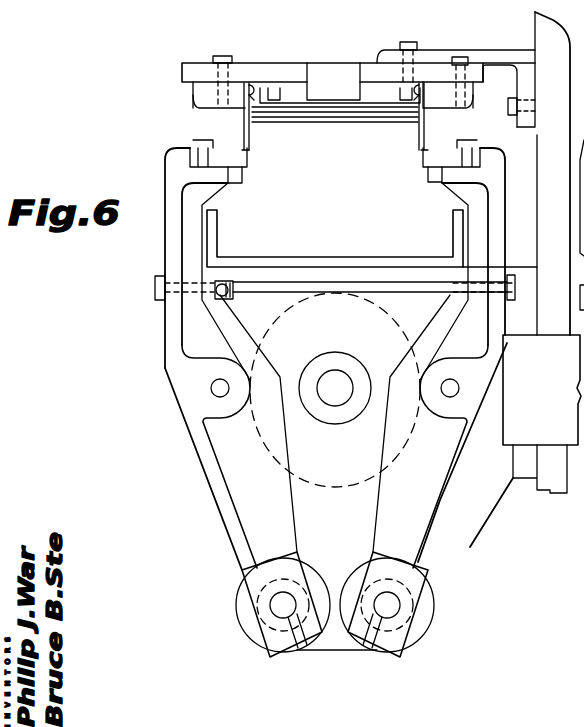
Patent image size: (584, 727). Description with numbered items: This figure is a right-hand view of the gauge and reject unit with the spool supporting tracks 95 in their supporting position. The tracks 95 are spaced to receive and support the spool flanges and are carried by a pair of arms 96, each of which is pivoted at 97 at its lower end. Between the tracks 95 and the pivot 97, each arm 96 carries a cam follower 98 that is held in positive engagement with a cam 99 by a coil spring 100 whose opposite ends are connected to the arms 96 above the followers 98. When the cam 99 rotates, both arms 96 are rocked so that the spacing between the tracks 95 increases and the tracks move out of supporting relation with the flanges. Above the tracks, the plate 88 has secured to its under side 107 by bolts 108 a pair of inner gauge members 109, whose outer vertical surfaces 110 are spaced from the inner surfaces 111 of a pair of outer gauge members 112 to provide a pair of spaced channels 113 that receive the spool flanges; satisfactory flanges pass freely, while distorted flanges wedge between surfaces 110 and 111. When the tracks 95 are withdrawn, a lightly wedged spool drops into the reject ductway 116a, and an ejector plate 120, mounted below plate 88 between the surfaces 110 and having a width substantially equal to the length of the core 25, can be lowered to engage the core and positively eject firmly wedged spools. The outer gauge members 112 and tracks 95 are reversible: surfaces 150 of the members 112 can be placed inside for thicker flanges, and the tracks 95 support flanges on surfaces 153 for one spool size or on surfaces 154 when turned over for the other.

The core 25 is at (343, 113).
The plate 88 is at (297, 52).
The tracks 95 is at (237, 170).
The arms 96 is at (173, 155).
The pivot 97 is at (275, 605).
The cam follower 98 is at (220, 368).
The cam 99 is at (377, 338).
The coil spring 100 is at (230, 300).
The under side 107 is at (187, 83).
The bolts 108 is at (410, 42).
The inner gauge members 109 is at (253, 100).
The outer vertical surfaces 110 is at (244, 106).
The inner surface 111 is at (228, 62).
The outer gauge members 112 is at (200, 99).
The channels 113 is at (250, 88).
The reject ductway 116a is at (305, 266).
The ejector plate 120 is at (333, 99).
The surfaces 150 is at (197, 93).
The surfaces 153 is at (200, 140).
The surfaces 154 is at (247, 160).